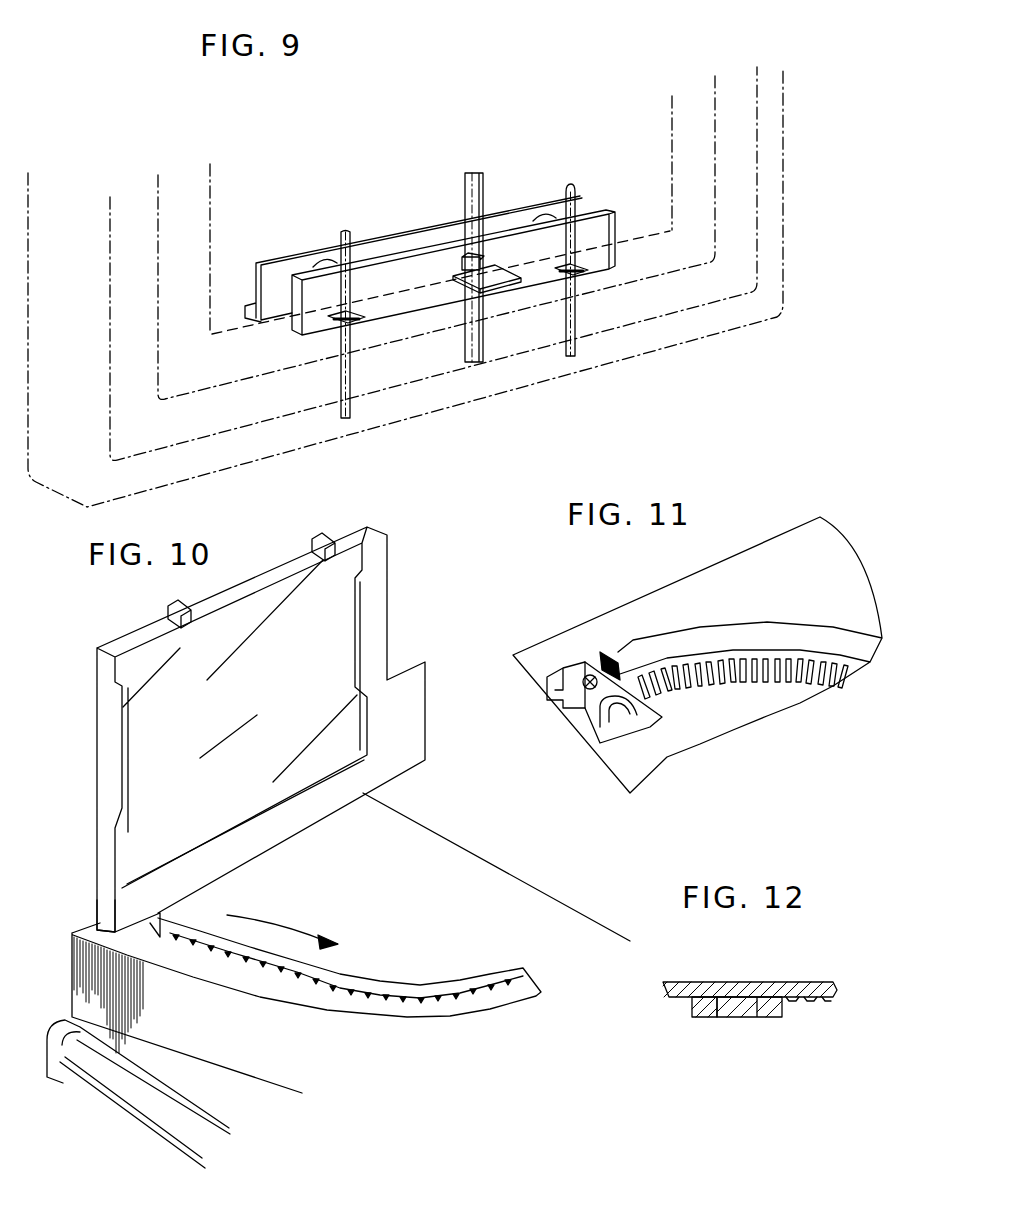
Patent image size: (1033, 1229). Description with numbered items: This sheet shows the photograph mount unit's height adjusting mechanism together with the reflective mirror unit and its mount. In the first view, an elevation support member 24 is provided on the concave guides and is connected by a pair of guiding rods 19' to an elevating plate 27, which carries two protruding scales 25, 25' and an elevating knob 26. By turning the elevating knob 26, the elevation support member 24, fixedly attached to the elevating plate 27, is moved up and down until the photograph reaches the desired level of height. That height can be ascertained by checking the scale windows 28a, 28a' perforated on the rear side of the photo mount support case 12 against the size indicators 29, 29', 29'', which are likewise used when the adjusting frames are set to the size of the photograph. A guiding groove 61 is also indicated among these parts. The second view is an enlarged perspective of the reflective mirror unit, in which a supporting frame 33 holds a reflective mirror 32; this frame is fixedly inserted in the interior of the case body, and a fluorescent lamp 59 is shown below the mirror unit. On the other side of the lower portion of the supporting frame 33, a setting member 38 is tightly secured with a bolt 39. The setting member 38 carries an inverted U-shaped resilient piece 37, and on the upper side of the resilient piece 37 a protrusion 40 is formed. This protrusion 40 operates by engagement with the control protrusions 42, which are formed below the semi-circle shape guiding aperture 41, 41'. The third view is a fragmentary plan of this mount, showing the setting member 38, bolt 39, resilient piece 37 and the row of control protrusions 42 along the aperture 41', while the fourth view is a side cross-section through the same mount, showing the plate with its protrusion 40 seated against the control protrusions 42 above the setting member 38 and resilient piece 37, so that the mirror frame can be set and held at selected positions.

In FIG. 9, the photo mount support case 12 is at (363, 434).
In FIG. 9, the guiding rods 19' is at (419, 206).
In FIG. 9, the elevation support member 24 is at (375, 240).
In FIG. 9, the elevating plate 27 is at (432, 263).
In FIG. 9, the size indicator 29 is at (519, 214).
In FIG. 9, the size indicator 29' is at (497, 237).
In FIG. 9, the size indicator 29'' is at (474, 263).
In FIG. 9, the protruding scale 25 is at (426, 380).
In FIG. 9, the protruding scale 25' is at (673, 312).
In FIG. 9, the scale window 28a is at (410, 353).
In FIG. 9, the scale window 28a' is at (648, 290).
In FIG. 9, the guiding groove 61 is at (485, 340).
In FIG. 9, the elevating knob 26 is at (513, 288).
In FIG. 10, the supporting frame 33 is at (388, 593).
In FIG. 10, the reflective mirror 32 is at (142, 740).
In FIG. 10, the setting member 38 is at (99, 902).
In FIG. 11, the setting member 38 is at (580, 701).
In FIG. 12, the setting member 38 is at (692, 1015).
In FIG. 10, the semi-circle shape guiding aperture 41 is at (306, 1004).
In FIG. 11, the semi-circle shape guiding aperture 41' is at (697, 655).
In FIG. 10, the control protrusions 42 is at (497, 988).
In FIG. 11, the control protrusions 42 is at (800, 678).
In FIG. 12, the control protrusions 42 is at (820, 1002).
In FIG. 10, the fluorescent lamp 59 is at (163, 1113).
In FIG. 12, the protrusion 40 is at (728, 982).
In FIG. 11, the resilient piece 37 is at (615, 717).
In FIG. 12, the resilient piece 37 is at (735, 1018).
In FIG. 11, the bolt 39 is at (582, 682).